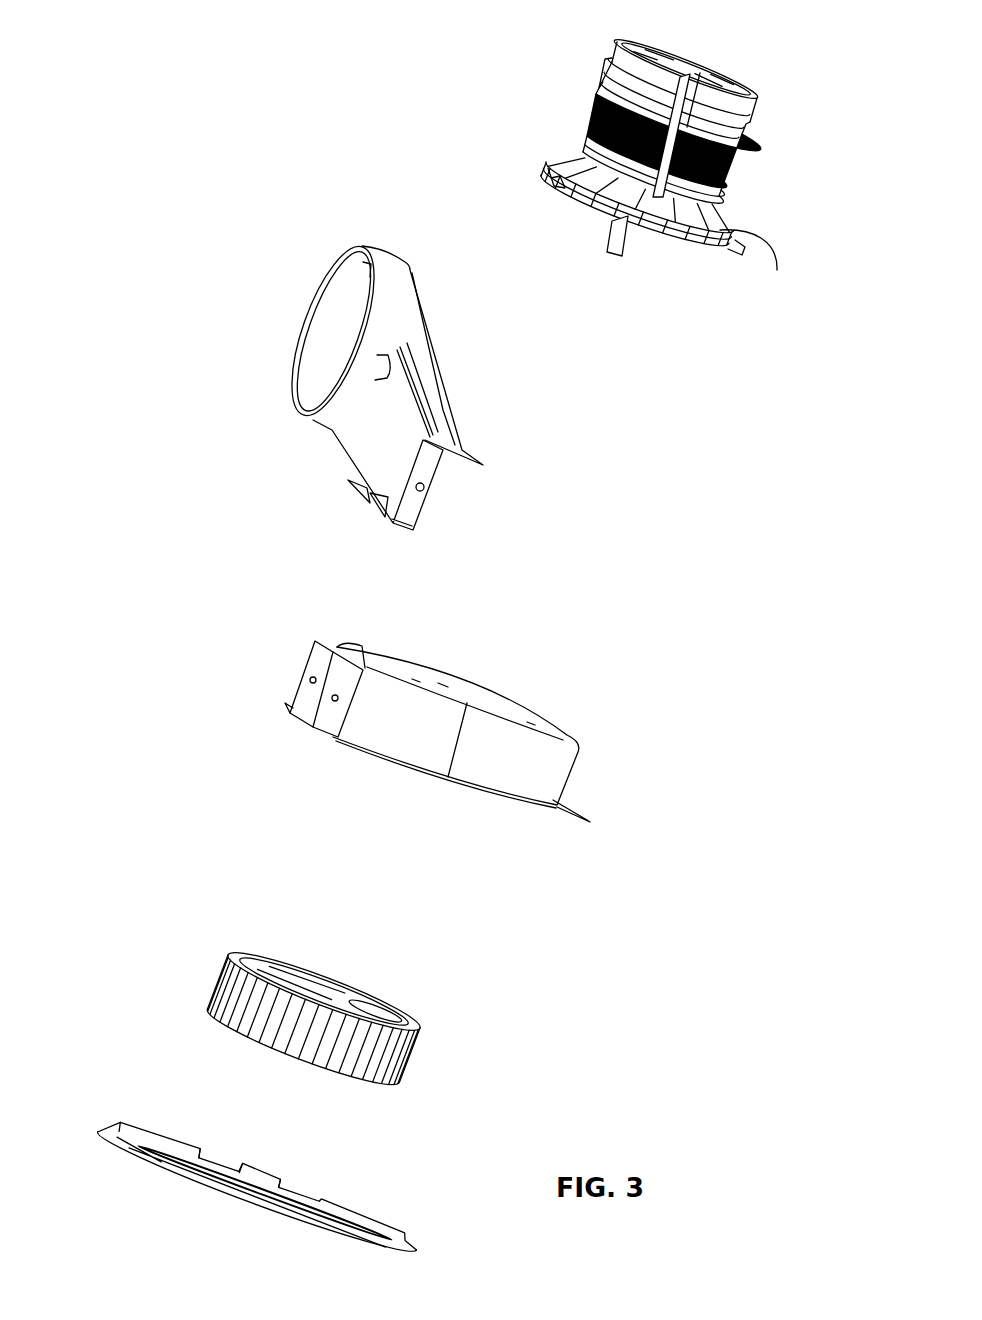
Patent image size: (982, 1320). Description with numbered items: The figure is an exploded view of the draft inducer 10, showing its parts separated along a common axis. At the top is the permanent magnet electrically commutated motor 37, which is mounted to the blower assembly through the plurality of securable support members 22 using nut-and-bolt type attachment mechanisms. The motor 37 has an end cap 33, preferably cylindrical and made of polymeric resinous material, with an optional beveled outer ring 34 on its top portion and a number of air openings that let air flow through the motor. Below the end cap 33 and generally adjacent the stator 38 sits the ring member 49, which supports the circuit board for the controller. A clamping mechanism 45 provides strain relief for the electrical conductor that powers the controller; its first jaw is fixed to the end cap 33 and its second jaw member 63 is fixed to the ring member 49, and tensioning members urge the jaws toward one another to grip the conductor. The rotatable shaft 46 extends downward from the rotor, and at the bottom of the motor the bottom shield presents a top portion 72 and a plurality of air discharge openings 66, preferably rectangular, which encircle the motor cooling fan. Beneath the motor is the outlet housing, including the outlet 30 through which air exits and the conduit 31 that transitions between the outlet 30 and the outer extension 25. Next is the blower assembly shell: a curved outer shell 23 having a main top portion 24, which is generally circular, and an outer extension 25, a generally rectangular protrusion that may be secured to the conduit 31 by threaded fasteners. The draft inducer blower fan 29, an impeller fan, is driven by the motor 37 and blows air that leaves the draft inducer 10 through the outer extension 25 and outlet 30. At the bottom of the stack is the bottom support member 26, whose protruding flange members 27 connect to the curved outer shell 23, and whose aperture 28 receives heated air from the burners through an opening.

The draft inducer 10 is at (750, 55).
The securable support members 22 is at (717, 257).
The curved outer shell 23 is at (547, 775).
The main top portion 24 is at (548, 725).
The outer extension 25 is at (385, 665).
The bottom support member 26 is at (380, 1223).
The protruding flange members 27 is at (270, 1162).
The aperture 28 is at (278, 1193).
The draft inducer blower fan 29 is at (412, 1047).
The outlet 30 is at (386, 250).
The conduit 31 is at (357, 447).
The end cap 33 is at (673, 98).
The beveled outer ring 34 is at (683, 78).
The permanent magnet electrically commutated motor 37 is at (653, 169).
The stator 38 is at (674, 141).
The clamping mechanism 45 is at (640, 207).
The rotatable shaft 46 is at (623, 243).
The ring member 49 is at (668, 114).
The second jaw member 63 is at (605, 73).
The air discharge openings 66 is at (754, 263).
The top portion 72 is at (676, 135).